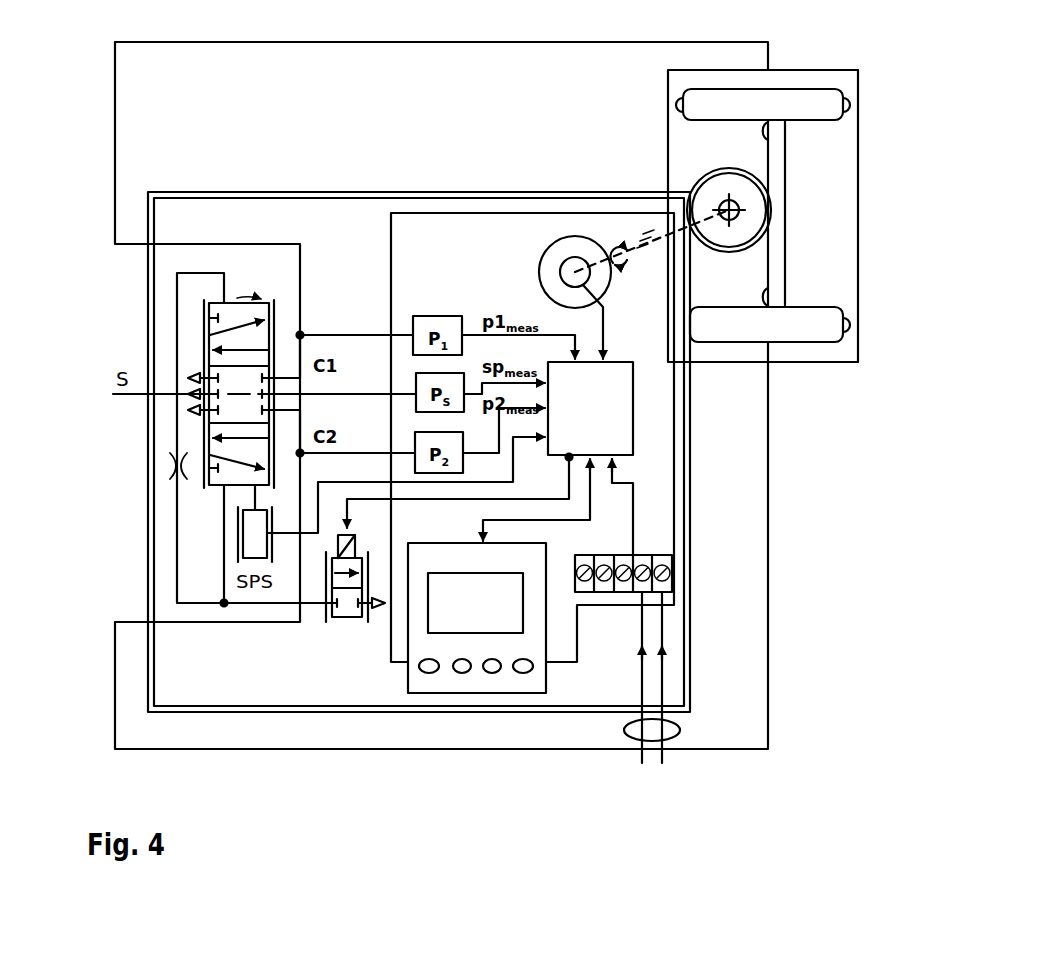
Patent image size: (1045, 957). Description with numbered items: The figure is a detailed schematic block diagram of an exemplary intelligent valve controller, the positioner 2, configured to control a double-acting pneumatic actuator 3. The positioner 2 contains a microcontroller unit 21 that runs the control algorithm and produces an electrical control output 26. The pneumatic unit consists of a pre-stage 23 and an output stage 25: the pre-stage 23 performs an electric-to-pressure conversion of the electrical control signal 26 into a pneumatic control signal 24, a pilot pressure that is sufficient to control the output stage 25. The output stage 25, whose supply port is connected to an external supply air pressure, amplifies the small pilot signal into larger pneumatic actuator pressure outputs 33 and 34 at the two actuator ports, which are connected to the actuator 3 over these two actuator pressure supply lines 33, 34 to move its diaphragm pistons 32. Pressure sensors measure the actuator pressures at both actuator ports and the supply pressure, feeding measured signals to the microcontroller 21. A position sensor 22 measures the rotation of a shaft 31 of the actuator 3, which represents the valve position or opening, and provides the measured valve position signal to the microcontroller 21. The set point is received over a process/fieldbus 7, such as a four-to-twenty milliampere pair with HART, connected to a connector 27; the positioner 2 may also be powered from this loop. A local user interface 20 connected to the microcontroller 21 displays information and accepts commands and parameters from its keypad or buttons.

The valve positioner 2 is at (419, 430).
The double-acting pneumatic actuator 3 is at (788, 68).
The process/fieldbus 7 is at (651, 712).
The local user interface 20 is at (408, 690).
The microcontroller unit 21 is at (640, 354).
The position sensor 22 is at (540, 268).
The pre-stage 23 is at (326, 622).
The pneumatic control signal 24 is at (177, 520).
The output stage 25 is at (205, 432).
The electrical control output 26 is at (468, 497).
The connector 27 is at (672, 573).
The shaft 31 is at (722, 170).
The diaphragm pistons 32 is at (850, 100).
The actuator pressure supply line 33 is at (470, 40).
The actuator pressure supply line 34 is at (510, 750).